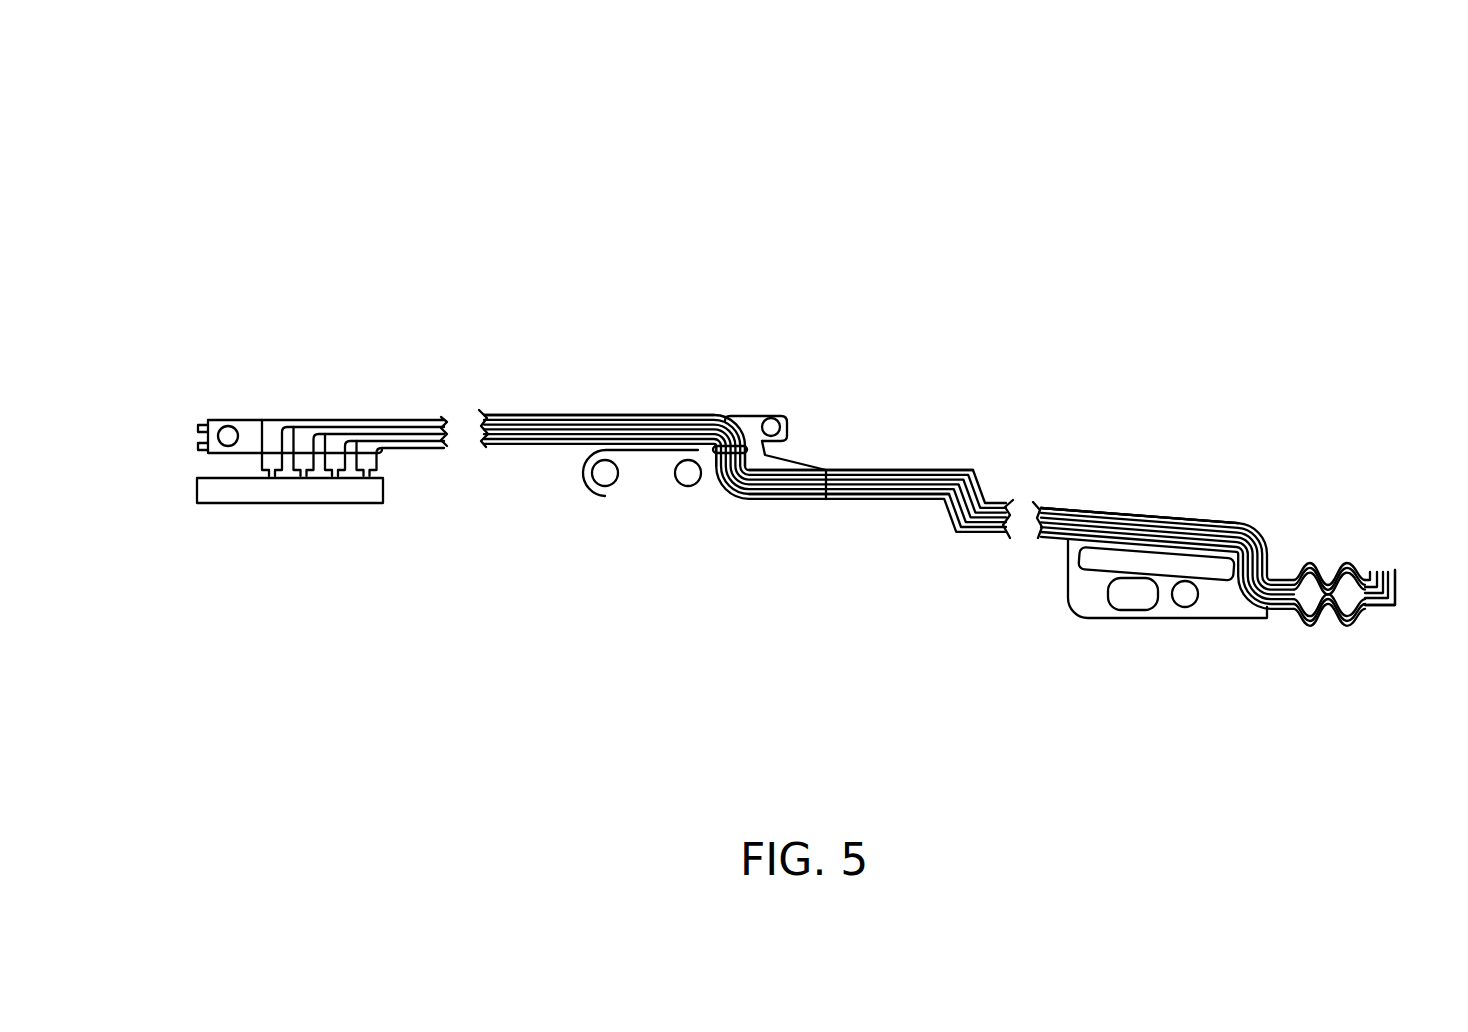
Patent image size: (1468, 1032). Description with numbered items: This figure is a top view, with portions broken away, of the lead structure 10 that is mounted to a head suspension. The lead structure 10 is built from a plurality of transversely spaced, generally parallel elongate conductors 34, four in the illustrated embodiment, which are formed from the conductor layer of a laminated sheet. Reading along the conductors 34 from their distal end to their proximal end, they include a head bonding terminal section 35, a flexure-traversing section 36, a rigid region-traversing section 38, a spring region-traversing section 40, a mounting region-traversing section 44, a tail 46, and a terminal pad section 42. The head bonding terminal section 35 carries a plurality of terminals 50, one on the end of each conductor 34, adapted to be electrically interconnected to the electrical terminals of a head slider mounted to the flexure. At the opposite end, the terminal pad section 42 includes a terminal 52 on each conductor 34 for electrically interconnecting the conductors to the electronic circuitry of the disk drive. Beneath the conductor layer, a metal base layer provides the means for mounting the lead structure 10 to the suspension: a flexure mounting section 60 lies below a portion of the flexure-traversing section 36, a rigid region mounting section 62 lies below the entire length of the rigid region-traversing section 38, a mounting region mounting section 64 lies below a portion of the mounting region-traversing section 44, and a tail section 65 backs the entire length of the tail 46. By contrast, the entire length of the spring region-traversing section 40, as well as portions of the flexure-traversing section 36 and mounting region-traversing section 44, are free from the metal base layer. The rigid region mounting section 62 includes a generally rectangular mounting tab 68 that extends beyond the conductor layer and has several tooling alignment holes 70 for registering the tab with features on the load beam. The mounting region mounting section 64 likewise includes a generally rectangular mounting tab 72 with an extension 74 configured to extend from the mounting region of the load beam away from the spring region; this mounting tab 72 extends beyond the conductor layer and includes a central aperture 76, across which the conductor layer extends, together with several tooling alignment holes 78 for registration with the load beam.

The lead structure 10 is at (455, 332).
The conductors 34 is at (1204, 528).
The head bonding terminal section 35 is at (1423, 524).
The flexure-traversing section 36 is at (1316, 513).
The rigid region-traversing section 38 is at (1101, 458).
The spring region-traversing section 40 is at (902, 419).
The terminal pad section 42 is at (290, 353).
The mounting region-traversing section 44 is at (693, 337).
The tail 46 is at (563, 301).
The terminals 50 is at (1373, 577).
The terminal 52 is at (370, 462).
The flexure mounting section 60 is at (1397, 602).
The rigid region mounting section 62 is at (1088, 603).
The mounting region mounting section 64 is at (780, 434).
The tail section 65 is at (207, 453).
The mounting tab 68 is at (1217, 610).
The tooling alignment holes 70 is at (1178, 603).
The mounting tab 72 is at (752, 424).
The extension 74 is at (636, 483).
The central aperture 76 is at (767, 452).
The tooling alignment holes 78 is at (688, 483).